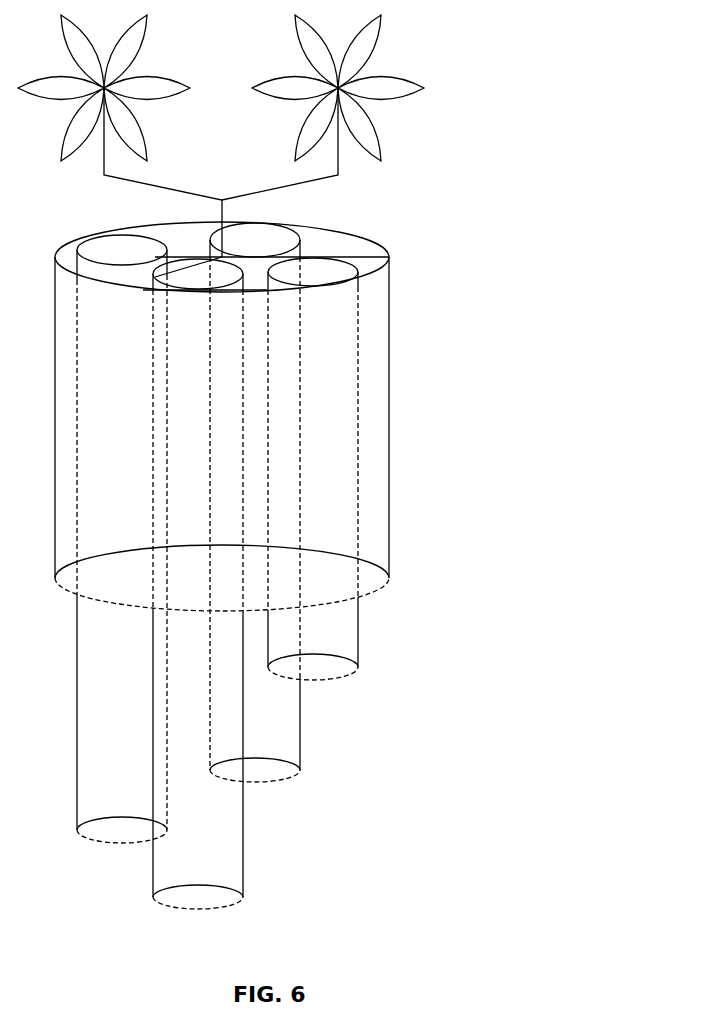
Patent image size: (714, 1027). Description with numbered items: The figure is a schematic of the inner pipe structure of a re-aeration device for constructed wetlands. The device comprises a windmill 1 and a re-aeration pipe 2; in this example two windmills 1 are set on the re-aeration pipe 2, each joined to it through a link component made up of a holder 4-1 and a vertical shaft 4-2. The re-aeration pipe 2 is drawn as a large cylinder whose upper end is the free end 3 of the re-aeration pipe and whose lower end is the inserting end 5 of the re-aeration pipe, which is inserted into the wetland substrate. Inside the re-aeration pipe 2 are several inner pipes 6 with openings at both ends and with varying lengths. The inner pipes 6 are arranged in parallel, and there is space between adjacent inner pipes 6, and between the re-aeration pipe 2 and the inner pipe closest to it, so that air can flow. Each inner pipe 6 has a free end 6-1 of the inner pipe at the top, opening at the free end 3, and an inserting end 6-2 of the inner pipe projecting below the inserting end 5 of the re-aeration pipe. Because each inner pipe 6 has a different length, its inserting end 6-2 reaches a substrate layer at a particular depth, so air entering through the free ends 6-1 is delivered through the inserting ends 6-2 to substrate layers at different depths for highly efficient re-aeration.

The windmill 1 is at (135, 119).
The re-aeration pipe 2 is at (338, 416).
The free end of a re-aeration pipe 3 is at (453, 272).
The holder 4-1 is at (137, 172).
The vertical shaft 4-2 is at (289, 210).
The inserting end of a re-aeration pipe 5 is at (453, 553).
The inner pipe 6 is at (335, 566).
The free end of the inner pipe 6-1 is at (367, 240).
The inserting end of the inner pipe 6-2 is at (422, 630).